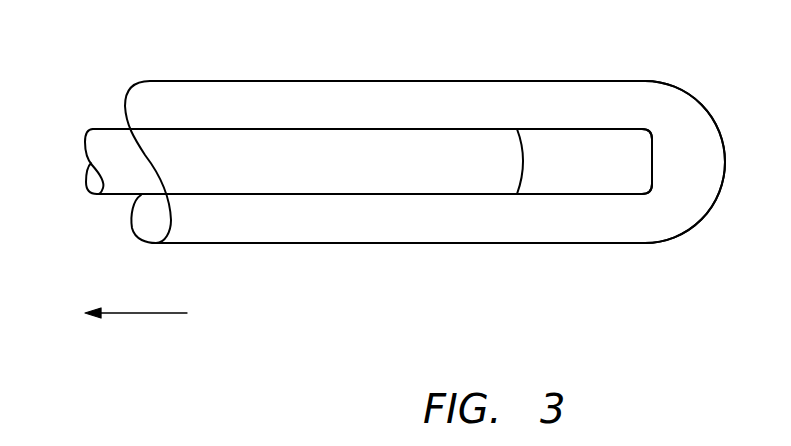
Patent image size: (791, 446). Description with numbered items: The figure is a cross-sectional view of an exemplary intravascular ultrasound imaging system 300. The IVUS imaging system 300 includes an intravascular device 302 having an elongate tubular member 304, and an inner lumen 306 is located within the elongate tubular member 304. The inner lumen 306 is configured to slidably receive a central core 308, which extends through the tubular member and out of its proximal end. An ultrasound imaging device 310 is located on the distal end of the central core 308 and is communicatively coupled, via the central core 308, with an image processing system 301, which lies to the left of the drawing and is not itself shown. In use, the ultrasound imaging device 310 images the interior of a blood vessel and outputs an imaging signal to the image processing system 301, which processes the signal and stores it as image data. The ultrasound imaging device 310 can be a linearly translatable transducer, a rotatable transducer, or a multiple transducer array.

The IVUS imaging system 300 is at (468, 293).
The image processing system 301 is at (138, 370).
The intravascular device 302 is at (432, 73).
The elongate tubular member 304 is at (607, 80).
The inner lumen 306 is at (328, 228).
The central core 308 is at (235, 128).
The ultrasound imaging device 310 is at (592, 195).